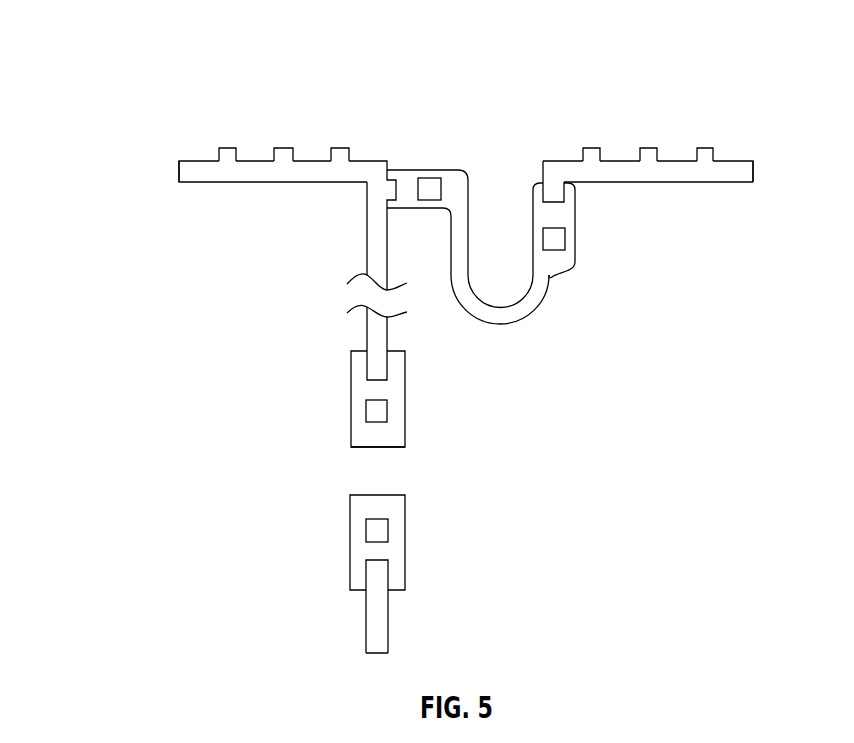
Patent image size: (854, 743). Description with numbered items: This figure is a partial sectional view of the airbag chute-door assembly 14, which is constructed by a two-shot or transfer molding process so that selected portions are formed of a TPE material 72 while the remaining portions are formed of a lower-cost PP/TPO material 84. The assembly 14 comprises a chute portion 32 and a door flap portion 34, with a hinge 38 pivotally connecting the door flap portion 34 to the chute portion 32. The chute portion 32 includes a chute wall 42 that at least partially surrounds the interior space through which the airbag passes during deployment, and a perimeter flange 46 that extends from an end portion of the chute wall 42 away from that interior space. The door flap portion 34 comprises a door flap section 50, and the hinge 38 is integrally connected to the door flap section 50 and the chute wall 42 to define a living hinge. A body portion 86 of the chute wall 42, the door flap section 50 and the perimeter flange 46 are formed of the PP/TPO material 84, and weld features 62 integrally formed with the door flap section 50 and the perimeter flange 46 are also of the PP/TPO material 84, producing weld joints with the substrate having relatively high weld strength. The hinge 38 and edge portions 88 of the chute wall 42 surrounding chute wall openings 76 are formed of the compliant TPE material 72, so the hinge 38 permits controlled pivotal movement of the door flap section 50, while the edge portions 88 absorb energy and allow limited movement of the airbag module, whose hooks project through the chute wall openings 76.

The airbag chute-door assembly 14 is at (117, 39).
The chute portion 32 is at (316, 270).
The door flap portion 34 is at (648, 167).
The hinge 38 is at (523, 316).
The chute wall 42 is at (480, 411).
The perimeter flange 46 is at (261, 179).
The door flap section 50 is at (634, 176).
The weld features 62 is at (228, 146).
The TPE material 72 is at (576, 257).
The chute wall openings 76 is at (395, 470).
The PP/TPO material 84 is at (200, 185).
The body portion 86 is at (367, 270).
The edge portions 88 is at (349, 398).